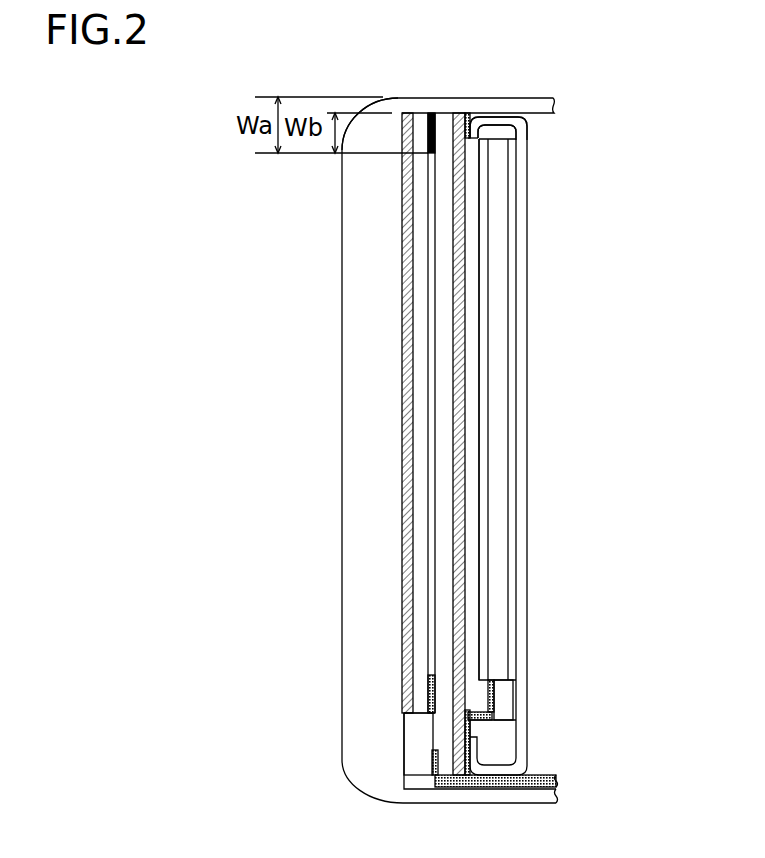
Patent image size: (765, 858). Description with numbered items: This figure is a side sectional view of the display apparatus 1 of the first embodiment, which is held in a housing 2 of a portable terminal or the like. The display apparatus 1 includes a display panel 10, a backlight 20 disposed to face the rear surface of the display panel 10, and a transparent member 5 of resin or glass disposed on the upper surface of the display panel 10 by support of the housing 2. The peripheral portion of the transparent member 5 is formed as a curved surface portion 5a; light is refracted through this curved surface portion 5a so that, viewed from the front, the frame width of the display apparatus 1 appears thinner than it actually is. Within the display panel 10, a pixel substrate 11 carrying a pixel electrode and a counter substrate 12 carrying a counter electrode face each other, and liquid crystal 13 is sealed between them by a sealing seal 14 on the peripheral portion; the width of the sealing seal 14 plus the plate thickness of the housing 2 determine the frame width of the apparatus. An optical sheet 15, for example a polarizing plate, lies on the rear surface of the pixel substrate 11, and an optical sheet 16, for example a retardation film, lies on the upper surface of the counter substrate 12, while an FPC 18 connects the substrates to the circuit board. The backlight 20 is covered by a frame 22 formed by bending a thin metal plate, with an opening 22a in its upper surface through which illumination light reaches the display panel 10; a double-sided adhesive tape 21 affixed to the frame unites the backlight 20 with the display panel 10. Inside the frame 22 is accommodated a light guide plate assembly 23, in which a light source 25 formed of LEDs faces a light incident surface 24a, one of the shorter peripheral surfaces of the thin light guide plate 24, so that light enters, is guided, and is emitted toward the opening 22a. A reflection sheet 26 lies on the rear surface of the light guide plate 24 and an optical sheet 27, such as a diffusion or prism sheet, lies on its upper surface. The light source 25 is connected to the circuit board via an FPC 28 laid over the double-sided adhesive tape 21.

The display apparatus 1 is at (641, 140).
The housing 2 is at (523, 98).
The transparent member 5 is at (341, 330).
The curved surface portion 5a is at (366, 108).
The display panel 10 is at (418, 119).
The pixel substrate 11 is at (440, 627).
The counter substrate 12 is at (420, 585).
The liquid crystal 13 is at (432, 656).
The sealing seal 14 is at (408, 710).
The optical sheet 15 is at (453, 541).
The optical sheet 16 is at (402, 498).
The FPC 18 is at (432, 775).
The backlight 20 is at (502, 120).
The double-sided adhesive tape 21 is at (466, 125).
The frame 22 is at (528, 430).
The opening 22a is at (472, 372).
The light guide plate assembly 23 is at (598, 624).
The light guide plate 24 is at (510, 637).
The light incident surface 24a is at (501, 683).
The light source 25 is at (507, 692).
The reflection sheet 26 is at (512, 527).
The optical sheet 27 is at (487, 487).
The FPC 28 is at (547, 778).